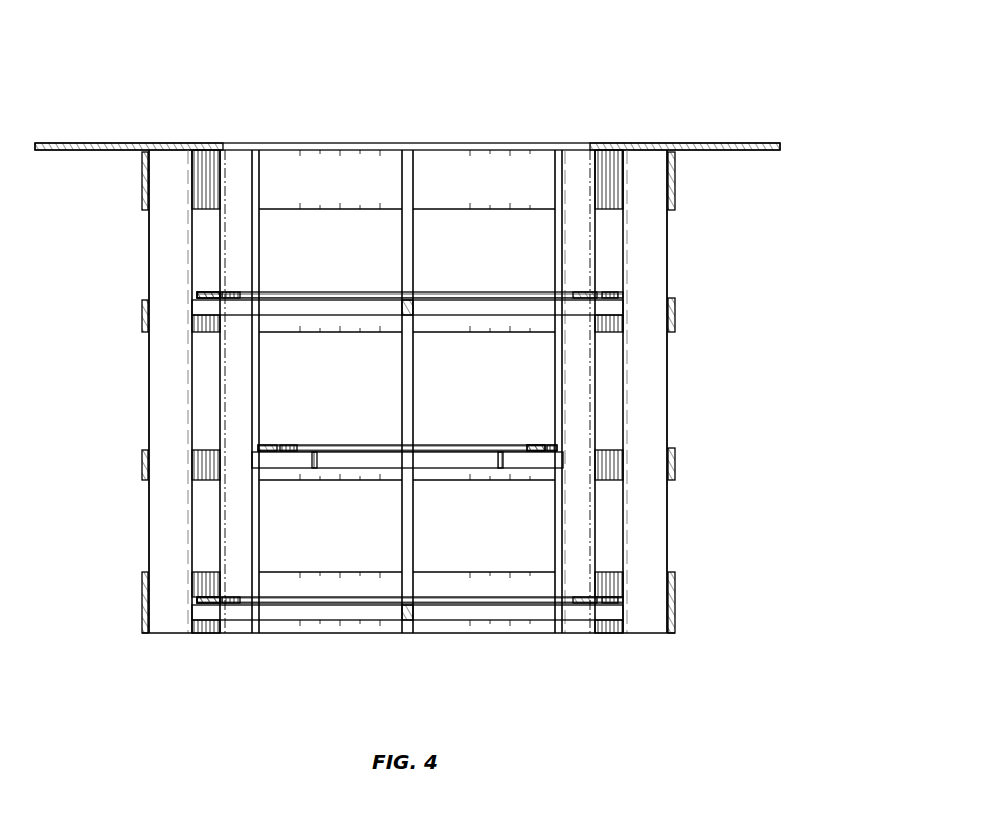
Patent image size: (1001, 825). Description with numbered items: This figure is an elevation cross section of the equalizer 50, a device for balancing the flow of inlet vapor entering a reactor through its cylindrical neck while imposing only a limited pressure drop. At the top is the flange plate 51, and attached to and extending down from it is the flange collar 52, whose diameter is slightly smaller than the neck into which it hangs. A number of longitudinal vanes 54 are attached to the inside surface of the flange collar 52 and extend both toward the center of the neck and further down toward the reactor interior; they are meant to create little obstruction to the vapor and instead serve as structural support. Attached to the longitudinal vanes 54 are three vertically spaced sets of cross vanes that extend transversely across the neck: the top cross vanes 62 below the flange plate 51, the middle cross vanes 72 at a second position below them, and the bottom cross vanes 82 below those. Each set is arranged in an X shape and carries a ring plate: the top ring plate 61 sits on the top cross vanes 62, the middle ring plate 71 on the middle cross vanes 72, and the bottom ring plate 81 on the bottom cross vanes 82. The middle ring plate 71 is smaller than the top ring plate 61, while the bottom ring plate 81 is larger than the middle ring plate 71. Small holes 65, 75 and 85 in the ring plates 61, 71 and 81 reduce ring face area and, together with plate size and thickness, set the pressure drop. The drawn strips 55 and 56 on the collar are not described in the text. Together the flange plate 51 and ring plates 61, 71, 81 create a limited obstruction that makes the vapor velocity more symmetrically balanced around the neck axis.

The equalizer 50 is at (200, 68).
The flange plate 51 is at (752, 143).
The flange collar 52 is at (142, 180).
The longitudinal vanes 54 is at (148, 256).
The intermediate connector strips 55 is at (142, 312).
The lower connector strip 56 is at (142, 600).
The top ring plate 61 is at (430, 292).
The top cross vanes 62 is at (318, 314).
The small holes 65 is at (227, 292).
The middle ring plate 71 is at (376, 445).
The middle cross vanes 72 is at (358, 468).
The small holes 75 is at (548, 445).
The bottom ring plate 81 is at (433, 597).
The bottom cross vanes 82 is at (318, 620).
The small holes 85 is at (228, 597).